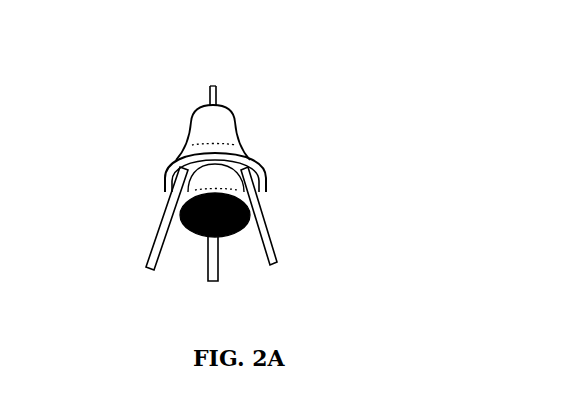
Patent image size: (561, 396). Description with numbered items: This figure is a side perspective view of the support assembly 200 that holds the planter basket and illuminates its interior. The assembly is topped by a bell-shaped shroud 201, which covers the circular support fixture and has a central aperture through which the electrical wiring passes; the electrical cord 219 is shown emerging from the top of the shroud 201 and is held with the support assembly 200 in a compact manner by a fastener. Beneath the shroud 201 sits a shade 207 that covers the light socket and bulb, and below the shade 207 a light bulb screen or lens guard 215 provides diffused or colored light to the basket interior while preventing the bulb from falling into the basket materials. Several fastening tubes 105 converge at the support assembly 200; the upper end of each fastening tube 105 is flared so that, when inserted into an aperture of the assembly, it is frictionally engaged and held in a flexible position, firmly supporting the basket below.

The support assembly 200 is at (408, 121).
The bell-shaped shroud 201 is at (220, 128).
The shade 207 is at (213, 185).
The electrical cord 219 is at (214, 90).
The light bulb screen or lens guard 215 is at (233, 241).
The fastening tube 105 is at (173, 215).